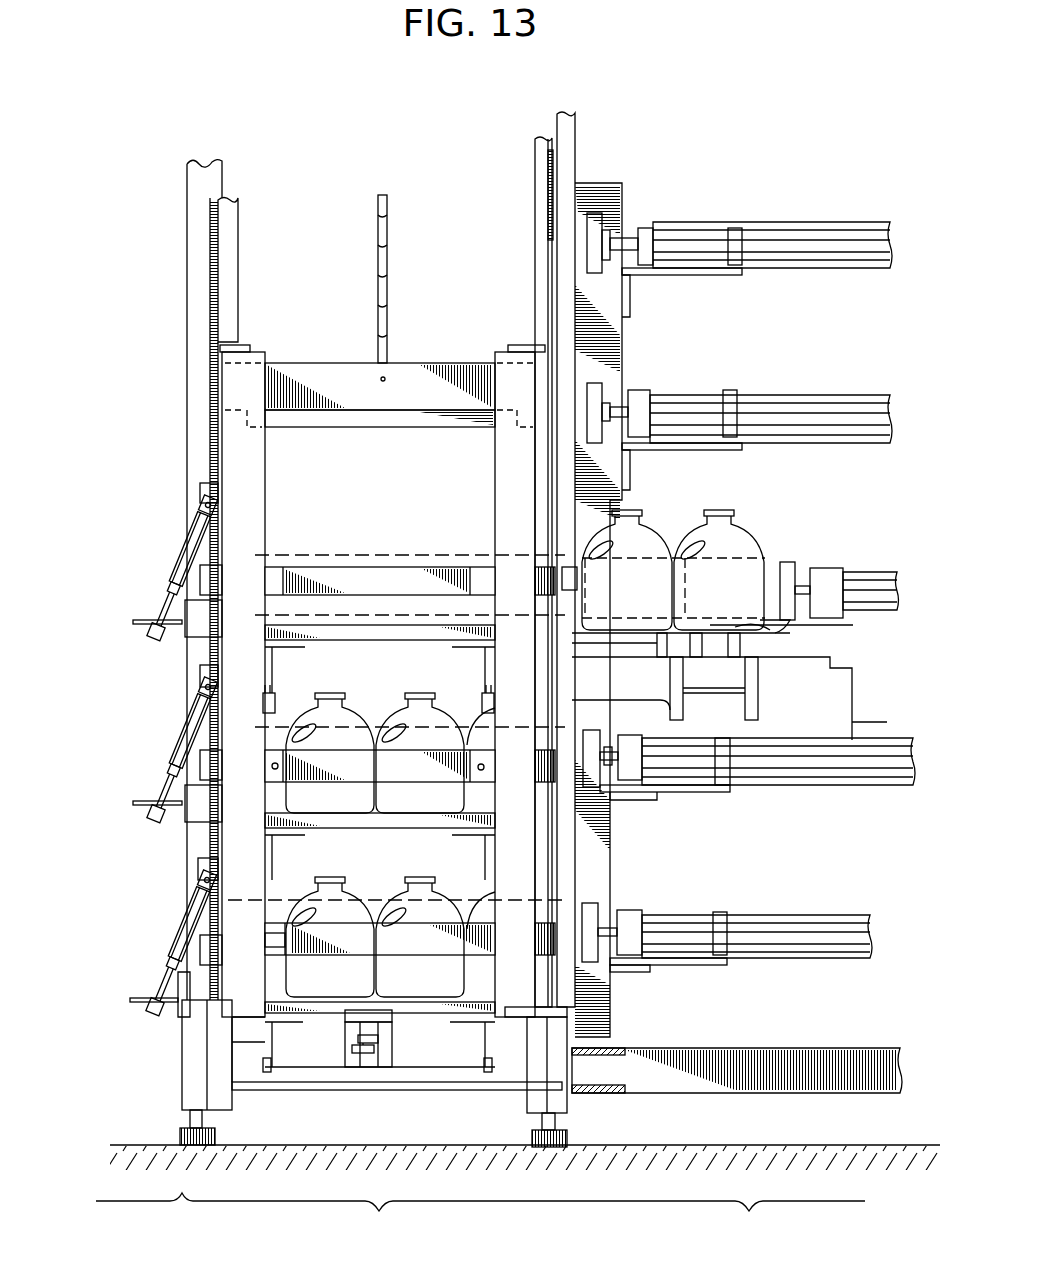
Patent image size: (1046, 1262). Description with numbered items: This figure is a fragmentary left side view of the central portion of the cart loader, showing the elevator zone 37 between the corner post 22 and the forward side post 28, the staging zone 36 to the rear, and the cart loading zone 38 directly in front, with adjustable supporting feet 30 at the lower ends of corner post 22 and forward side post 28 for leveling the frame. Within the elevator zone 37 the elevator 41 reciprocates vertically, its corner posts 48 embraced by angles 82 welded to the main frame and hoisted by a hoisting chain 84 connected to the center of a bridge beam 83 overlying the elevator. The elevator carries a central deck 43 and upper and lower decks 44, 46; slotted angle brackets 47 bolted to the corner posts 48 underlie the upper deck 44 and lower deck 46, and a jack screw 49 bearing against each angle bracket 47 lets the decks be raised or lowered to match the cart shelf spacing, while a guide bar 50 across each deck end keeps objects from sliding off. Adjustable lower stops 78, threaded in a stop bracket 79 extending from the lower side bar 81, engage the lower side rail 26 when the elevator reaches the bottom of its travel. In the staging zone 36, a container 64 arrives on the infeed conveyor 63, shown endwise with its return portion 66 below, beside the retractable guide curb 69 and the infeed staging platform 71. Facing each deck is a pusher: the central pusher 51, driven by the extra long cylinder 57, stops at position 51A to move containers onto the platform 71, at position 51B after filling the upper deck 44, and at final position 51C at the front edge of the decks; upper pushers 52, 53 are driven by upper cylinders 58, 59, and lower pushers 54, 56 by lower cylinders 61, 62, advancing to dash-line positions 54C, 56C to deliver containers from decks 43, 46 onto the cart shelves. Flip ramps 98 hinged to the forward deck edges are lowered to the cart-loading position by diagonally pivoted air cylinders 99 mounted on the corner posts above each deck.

The corner post 22 is at (193, 278).
The lower side rail 26 is at (800, 1056).
The forward side post 28 is at (577, 148).
The adjustable supporting foot 30 is at (188, 1120).
The central staging zone 36 is at (717, 1226).
The elevator zone 37 is at (381, 1224).
The cart loading zone 38 is at (144, 1219).
The elevator 41 is at (332, 361).
The central deck 43 is at (398, 819).
The upper deck 44 is at (439, 614).
The lower deck 46 is at (338, 1000).
The slotted angle bracket 47 is at (305, 647).
The corner post of elevator 48 is at (268, 468).
The jack screw 49 is at (276, 710).
The guide bar 50 is at (352, 570).
The central pusher 51 is at (778, 563).
The first pusher position 51A is at (694, 589).
The second pusher position 51B is at (602, 589).
The final pusher position 51C is at (182, 570).
The upper pusher 52 is at (608, 216).
The upper pusher 53 is at (602, 380).
The lower pusher 54 is at (589, 737).
The advanced lower pusher position 54C is at (172, 749).
The lower pusher 56 is at (602, 910).
The advanced lower pusher position 56C is at (178, 898).
The extra long cylinder 57 is at (872, 574).
The upper cylinder 58 is at (794, 264).
The upper cylinder 59 is at (796, 400).
The lower cylinder 61 is at (822, 780).
The lower cylinder 62 is at (806, 920).
The infeed conveyor 63 is at (774, 628).
The container 64 is at (650, 530).
The return portion of conveyor 66 is at (745, 712).
The retractable guide curb 69 is at (670, 654).
The infeed staging platform 71 is at (608, 642).
The adjustable lower stop 78 is at (379, 1047).
The stop bracket 79 is at (378, 1020).
The lower side bar 81 is at (356, 1090).
The angle 82 is at (234, 242).
The bridge beam 83 is at (413, 369).
The hoisting chain 84 is at (388, 224).
The flip ramp 98 is at (134, 620).
The air cylinder 99 is at (190, 550).